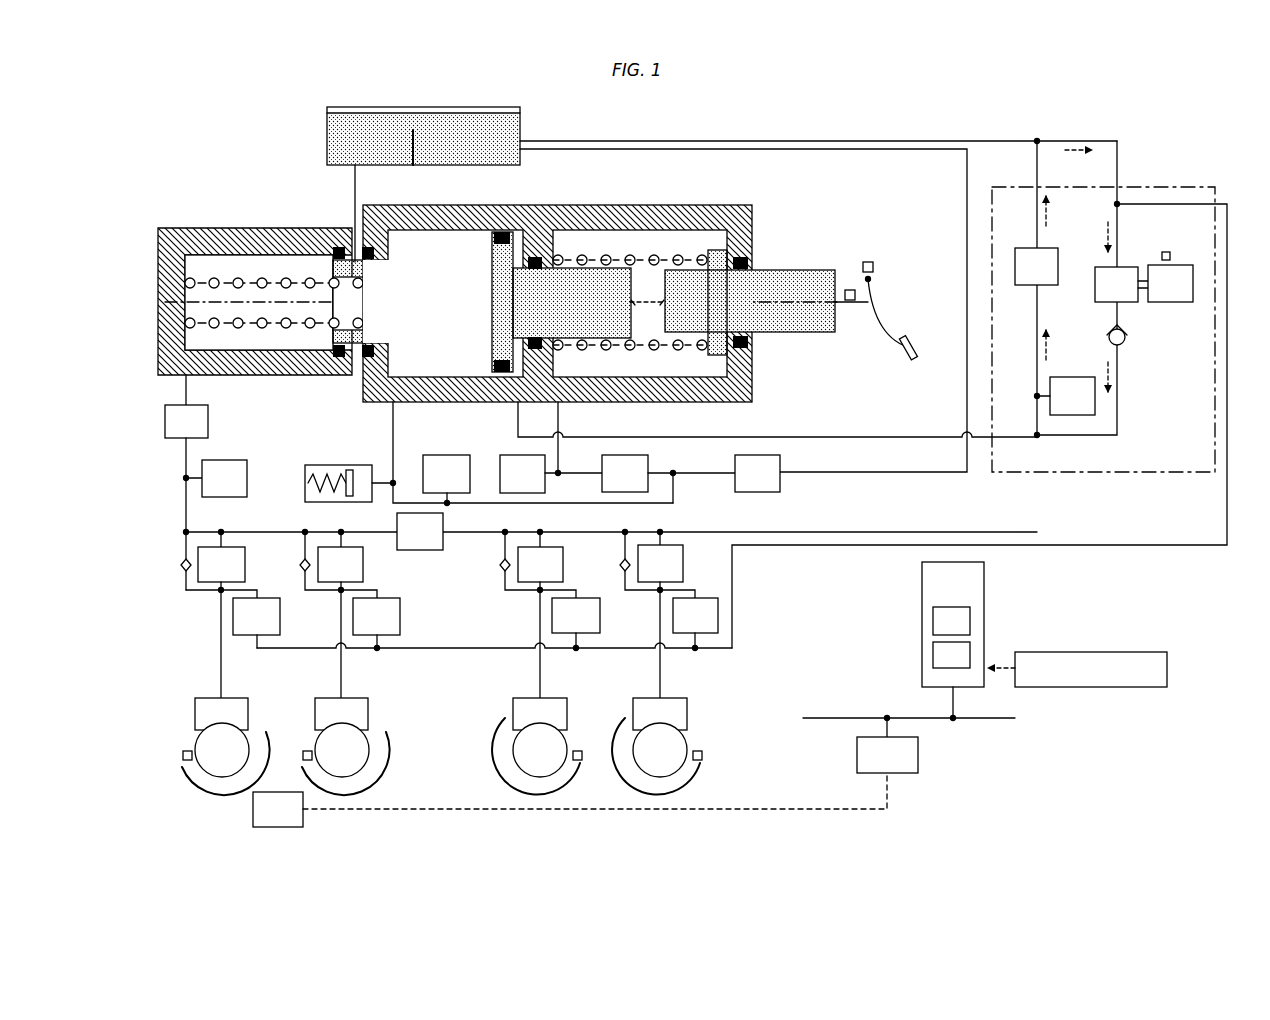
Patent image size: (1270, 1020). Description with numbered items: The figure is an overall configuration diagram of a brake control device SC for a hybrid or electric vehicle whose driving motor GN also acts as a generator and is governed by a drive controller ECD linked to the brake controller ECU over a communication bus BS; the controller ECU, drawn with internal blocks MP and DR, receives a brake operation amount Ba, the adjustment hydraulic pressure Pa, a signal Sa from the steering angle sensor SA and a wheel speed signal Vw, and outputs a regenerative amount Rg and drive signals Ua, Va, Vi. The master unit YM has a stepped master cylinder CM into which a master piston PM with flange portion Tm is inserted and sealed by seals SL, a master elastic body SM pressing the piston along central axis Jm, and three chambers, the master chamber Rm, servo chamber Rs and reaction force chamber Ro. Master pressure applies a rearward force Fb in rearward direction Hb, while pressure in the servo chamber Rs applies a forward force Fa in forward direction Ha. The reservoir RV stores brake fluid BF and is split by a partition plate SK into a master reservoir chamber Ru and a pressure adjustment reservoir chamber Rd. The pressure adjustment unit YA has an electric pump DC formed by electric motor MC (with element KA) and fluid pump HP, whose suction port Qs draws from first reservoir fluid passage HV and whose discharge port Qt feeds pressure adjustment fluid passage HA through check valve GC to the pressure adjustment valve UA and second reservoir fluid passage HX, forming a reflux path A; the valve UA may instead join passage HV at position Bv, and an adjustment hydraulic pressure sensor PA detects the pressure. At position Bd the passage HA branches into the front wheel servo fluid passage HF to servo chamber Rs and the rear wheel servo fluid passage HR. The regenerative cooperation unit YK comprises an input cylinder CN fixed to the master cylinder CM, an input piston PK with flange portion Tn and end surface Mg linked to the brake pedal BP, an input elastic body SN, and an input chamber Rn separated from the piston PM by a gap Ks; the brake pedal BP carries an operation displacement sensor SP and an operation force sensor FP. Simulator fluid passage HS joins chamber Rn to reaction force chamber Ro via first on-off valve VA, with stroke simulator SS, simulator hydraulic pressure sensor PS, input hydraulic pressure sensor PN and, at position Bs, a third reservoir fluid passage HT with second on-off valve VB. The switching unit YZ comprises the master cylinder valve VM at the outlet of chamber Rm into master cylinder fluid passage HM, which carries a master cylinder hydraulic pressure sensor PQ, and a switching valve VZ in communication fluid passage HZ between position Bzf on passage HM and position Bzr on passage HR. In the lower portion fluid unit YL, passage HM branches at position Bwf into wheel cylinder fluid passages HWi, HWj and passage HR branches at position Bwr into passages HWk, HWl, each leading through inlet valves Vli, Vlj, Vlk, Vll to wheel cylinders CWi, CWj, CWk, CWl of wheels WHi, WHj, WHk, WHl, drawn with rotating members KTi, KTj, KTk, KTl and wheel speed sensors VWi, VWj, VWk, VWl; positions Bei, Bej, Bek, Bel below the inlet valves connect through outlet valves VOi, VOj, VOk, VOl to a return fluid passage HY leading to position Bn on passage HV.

The master reservoir RV is at (360, 107).
The partition plate SK is at (413, 130).
The master reservoir chamber Ru is at (373, 145).
The pressure adjustment reservoir chamber Rd is at (463, 145).
The brake fluid BF is at (521, 135).
The first reservoir fluid passage HV is at (908, 141).
The second reservoir fluid passage HX is at (972, 150).
The third reservoir fluid passage HT is at (967, 190).
The position on first reservoir fluid passage Bv is at (1037, 141).
The master cylinder CM is at (255, 230).
The brake control device SC is at (208, 186).
The master unit YM is at (260, 192).
The central axis Jm is at (156, 297).
The master cylinder chamber Rm is at (216, 262).
The master elastic body SM is at (236, 326).
The rearward force Fb is at (425, 302).
The forward force Fa is at (517, 302).
The regenerative cooperation unit YK is at (772, 218).
The reaction force hydraulic pressure chamber Ro is at (425, 236).
The input cylinder CN is at (750, 396).
The master cylinder piston PM is at (436, 380).
The flange portion of input piston Tn is at (718, 380).
The gap Ks is at (647, 304).
The seal SL is at (504, 231).
The input chamber Rn is at (640, 352).
The end surface of input piston Mg is at (634, 256).
The input elastic body SN is at (600, 352).
The input piston PK is at (695, 352).
The flange portion of master piston Tm is at (480, 380).
The servo hydraulic pressure chamber Rs is at (541, 437).
The forward direction Ha is at (742, 183).
The rearward direction Hb is at (757, 184).
The operation force sensor FP is at (849, 289).
The operation displacement sensor SP is at (870, 270).
The brake operation member BP is at (910, 342).
The pressure adjustment unit YA is at (1148, 188).
The position on first reservoir fluid passage Bn is at (1115, 204).
The branch position Bd is at (1036, 434).
The pressure adjustment valve UA is at (1036, 266).
The fluid pump HP is at (1121, 284).
The electric motor MC is at (1170, 283).
The rotation angle sensor KA is at (1168, 251).
The electric pump DC is at (1143, 260).
The suction port Qs is at (1114, 264).
The discharge port Qt is at (1116, 310).
The check valve GC is at (1124, 334).
The pressure adjustment fluid passage HA is at (1036, 304).
The reflux path A is at (1062, 352).
The adjustment hydraulic pressure sensor PA is at (1065, 396).
The front wheel servo fluid passage HF is at (858, 437).
The simulator fluid passage HS is at (393, 430).
The master cylinder valve VM is at (186, 482).
The master cylinder fluid passage HM is at (180, 464).
The master cylinder hydraulic pressure sensor PQ is at (216, 478).
The stroke simulator SS is at (313, 465).
The simulator hydraulic pressure sensor PS is at (446, 480).
The input hydraulic pressure sensor PN is at (551, 474).
The first on-off valve VA is at (668, 473).
The connection position Bs is at (673, 460).
The second on-off valve VB is at (757, 473).
The rear wheel servo fluid passage HR is at (860, 532).
The communication fluid passage HZ is at (450, 532).
The switching valve VZ is at (420, 531).
The switching unit YZ is at (428, 560).
The front branch position Bwf is at (221, 532).
The position on master cylinder fluid passage Bzf is at (341, 532).
The position on rear wheel servo fluid passage Bzr is at (540, 532).
The rear branch position Bwr is at (660, 532).
The return fluid passage HY is at (1148, 545).
The inlet valve Vli is at (221, 615).
The inlet valve Vlj is at (341, 615).
The inlet valve Vlk is at (540, 615).
The inlet valve Vll is at (660, 615).
The position below inlet valve Bei is at (219, 593).
The position below inlet valve Bej is at (339, 593).
The position below inlet valve Bek is at (538, 593).
The position below inlet valve Bel is at (658, 593).
The outlet valve VOi is at (256, 623).
The outlet valve VOj is at (376, 624).
The outlet valve VOk is at (576, 624).
The outlet valve VOl is at (695, 624).
The lower portion fluid unit YL is at (192, 632).
The wheel cylinder fluid passage HWi is at (224, 660).
The wheel cylinder fluid passage HWj is at (344, 660).
The wheel cylinder fluid passage HWk is at (543, 660).
The wheel cylinder fluid passage HWl is at (663, 660).
The wheel cylinder CWi is at (221, 714).
The wheel cylinder CWj is at (341, 714).
The wheel cylinder CWk is at (540, 714).
The wheel cylinder CWl is at (660, 714).
The rotating member KTi is at (222, 750).
The rotating member KTj is at (342, 750).
The rotating member KTk is at (540, 750).
The rotating member KTl is at (660, 750).
The wheel WHi is at (186, 770).
The wheel WHj is at (370, 770).
The wheel WHk is at (578, 770).
The wheel WHl is at (698, 770).
The wheel speed sensor VWi is at (186, 750).
The wheel speed sensor VWj is at (306, 750).
The wheel speed sensor VWk is at (578, 750).
The wheel speed sensor VWl is at (697, 750).
The electric motor for driving GN is at (570, 800).
The brake controller ECU is at (953, 640).
The microprocessor MP is at (951, 621).
The drive circuit DR is at (951, 655).
The communication bus BS is at (909, 708).
The drive controller ECD is at (887, 745).
The steering angle sensor SA is at (1077, 669).
The sensor signals Sa is at (1025, 706).
The regenerative amount Rg is at (922, 582).
The drive signal Ua is at (922, 608).
The drive signal Va is at (922, 635).
The drive signal Vi is at (922, 662).
The brake operation amount Ba is at (988, 582).
The adjustment hydraulic pressure Pa is at (988, 608).
The wheel speed signal Vw is at (988, 635).